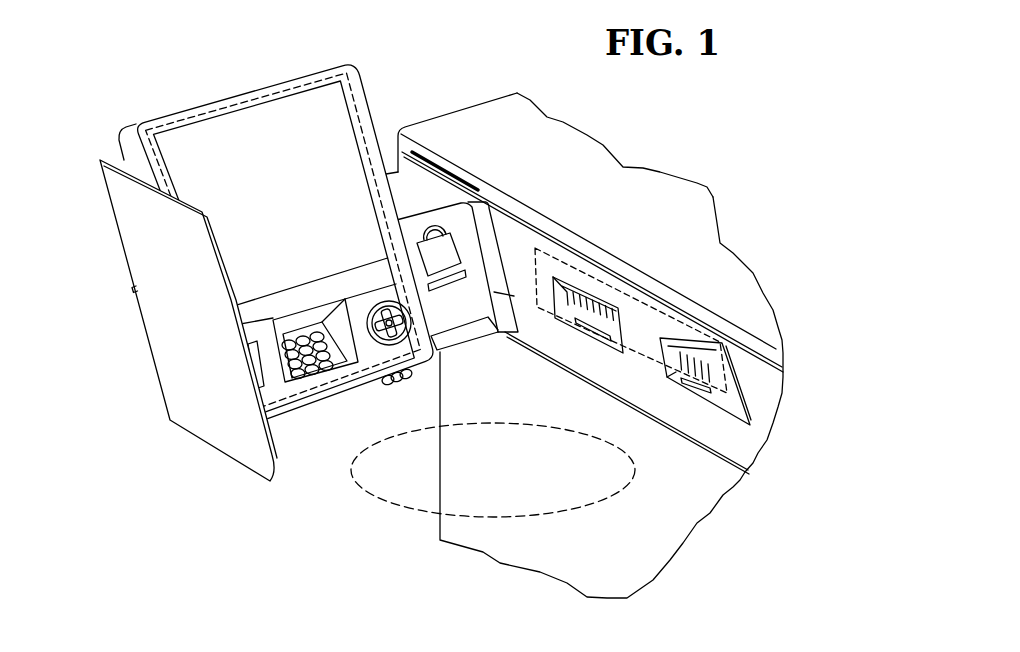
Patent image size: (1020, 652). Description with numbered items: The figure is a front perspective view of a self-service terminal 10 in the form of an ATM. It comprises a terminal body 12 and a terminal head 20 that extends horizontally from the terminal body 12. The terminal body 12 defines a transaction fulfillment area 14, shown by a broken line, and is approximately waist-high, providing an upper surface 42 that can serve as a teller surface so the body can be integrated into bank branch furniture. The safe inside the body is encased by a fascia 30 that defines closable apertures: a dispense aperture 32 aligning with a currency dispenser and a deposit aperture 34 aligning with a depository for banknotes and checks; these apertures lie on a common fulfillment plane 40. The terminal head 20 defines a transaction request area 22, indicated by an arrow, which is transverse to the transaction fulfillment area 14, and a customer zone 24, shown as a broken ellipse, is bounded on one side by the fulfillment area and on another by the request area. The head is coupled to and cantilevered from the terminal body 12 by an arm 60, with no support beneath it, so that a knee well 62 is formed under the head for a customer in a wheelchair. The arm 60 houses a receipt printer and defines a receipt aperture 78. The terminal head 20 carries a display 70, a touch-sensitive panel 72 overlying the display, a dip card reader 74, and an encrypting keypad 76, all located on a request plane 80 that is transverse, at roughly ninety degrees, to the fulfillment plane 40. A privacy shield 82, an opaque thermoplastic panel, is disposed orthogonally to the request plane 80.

The self-service terminal 10 is at (138, 522).
The terminal body 12 is at (715, 180).
The transaction fulfillment area 14 is at (690, 333).
The terminal head 20 is at (207, 100).
The transaction request area 22 is at (302, 83).
The customer zone 24 is at (418, 512).
The fascia 30 is at (742, 454).
The dispense aperture 32 is at (567, 313).
The deposit aperture 34 is at (677, 370).
The fulfillment plane 40 is at (802, 426).
The upper surface 42 is at (613, 152).
The arm 60 is at (413, 190).
The knee well 62 is at (318, 475).
The display 70 is at (271, 163).
The touch-sensitive panel 72 is at (258, 123).
The dip card reader 74 is at (402, 343).
The encrypting keypad 76 is at (312, 374).
The receipt aperture 78 is at (447, 255).
The request plane 80 is at (125, 396).
The privacy shield 82 is at (107, 158).